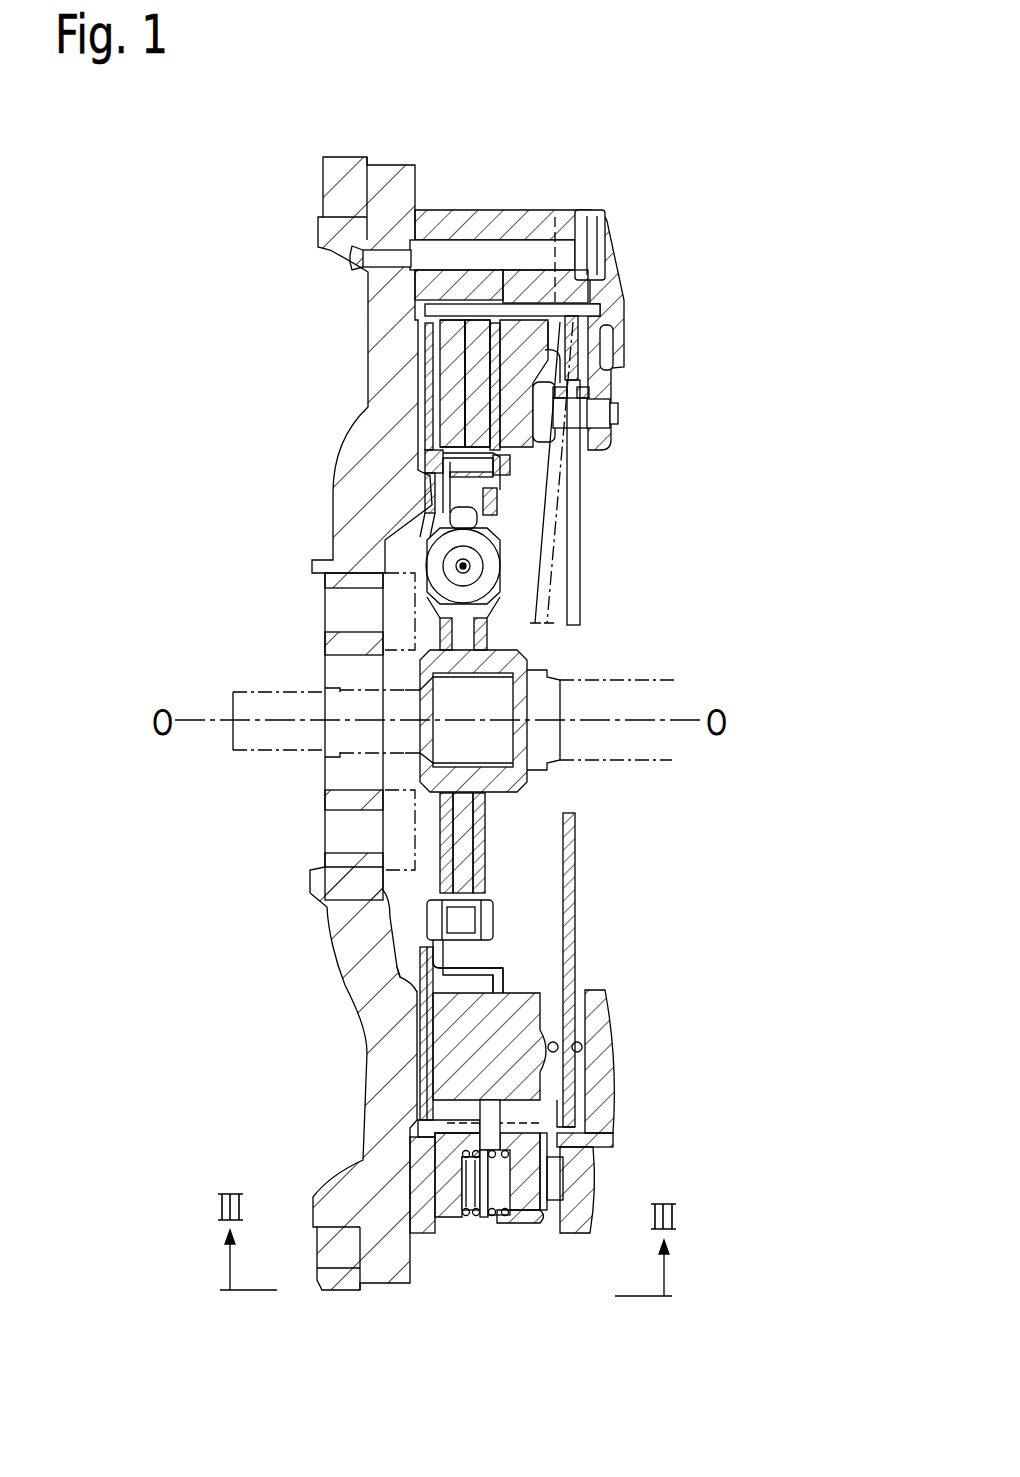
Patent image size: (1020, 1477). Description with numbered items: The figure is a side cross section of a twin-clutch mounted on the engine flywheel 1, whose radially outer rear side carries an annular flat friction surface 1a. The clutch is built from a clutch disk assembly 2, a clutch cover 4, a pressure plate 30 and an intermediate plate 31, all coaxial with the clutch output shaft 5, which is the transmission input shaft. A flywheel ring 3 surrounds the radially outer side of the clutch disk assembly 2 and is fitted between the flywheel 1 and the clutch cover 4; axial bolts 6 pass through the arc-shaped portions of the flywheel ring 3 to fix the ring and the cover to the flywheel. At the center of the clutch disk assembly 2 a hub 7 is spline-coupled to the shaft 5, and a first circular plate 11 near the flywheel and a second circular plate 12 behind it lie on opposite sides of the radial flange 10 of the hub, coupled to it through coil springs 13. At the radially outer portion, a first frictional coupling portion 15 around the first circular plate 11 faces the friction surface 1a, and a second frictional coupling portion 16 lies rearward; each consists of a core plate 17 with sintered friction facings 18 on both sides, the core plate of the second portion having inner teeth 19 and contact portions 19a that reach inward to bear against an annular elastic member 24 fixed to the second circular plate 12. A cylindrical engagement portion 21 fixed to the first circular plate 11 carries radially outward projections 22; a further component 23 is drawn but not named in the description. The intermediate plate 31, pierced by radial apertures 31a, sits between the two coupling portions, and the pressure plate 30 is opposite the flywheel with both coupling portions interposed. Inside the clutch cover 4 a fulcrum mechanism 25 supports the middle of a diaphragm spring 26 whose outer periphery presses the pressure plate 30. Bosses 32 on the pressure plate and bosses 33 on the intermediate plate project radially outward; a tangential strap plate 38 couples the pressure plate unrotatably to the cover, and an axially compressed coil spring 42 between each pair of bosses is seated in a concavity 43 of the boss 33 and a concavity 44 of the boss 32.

The flywheel 1 is at (340, 497).
The friction surface 1a is at (412, 1005).
The clutch disk assembly 2 is at (438, 623).
The flywheel ring 3 is at (412, 291).
The clutch cover 4 is at (620, 302).
The clutch output shaft 5 is at (582, 683).
The axial bolts 6 is at (598, 250).
The hub 7 is at (522, 792).
The radial flange 10 is at (466, 844).
The first circular plate 11 is at (442, 852).
The second circular plate 12 is at (487, 888).
The coil springs 13 is at (440, 553).
The first frictional coupling portion 15 is at (476, 400).
The second frictional coupling portion 16 is at (386, 373).
The core plate 17 is at (547, 395).
The friction facings 18 is at (547, 372).
The inner teeth 19 is at (513, 960).
The contact portions 19a is at (500, 505).
The cylindrical engagement portion 21 is at (424, 468).
The projections 22 is at (512, 468).
The bracket 23 is at (490, 964).
The elastic member 24 is at (497, 520).
The fulcrum mechanism 25 is at (618, 411).
The diaphragm spring 26 is at (540, 604).
The pressure plate 30 is at (527, 1013).
The intermediate plate 31 is at (455, 1086).
The apertures 31a is at (560, 383).
The bosses 32 is at (532, 1224).
The bosses 33 is at (453, 1233).
The strap plate 38 is at (602, 1137).
The coil spring 42 is at (480, 1215).
The concavity 43 is at (470, 1232).
The concavity 44 is at (520, 1186).